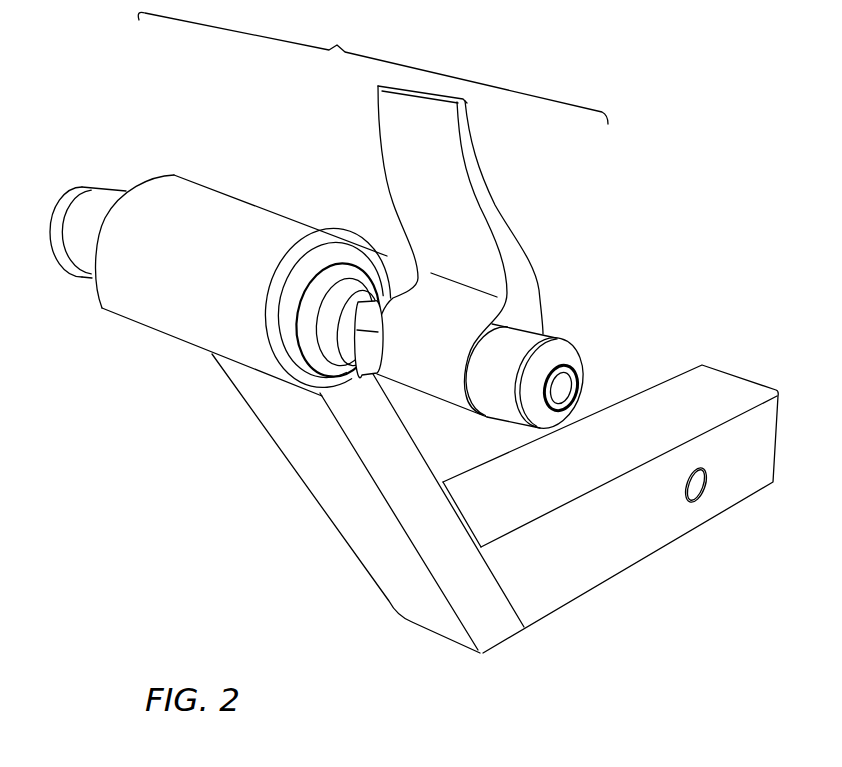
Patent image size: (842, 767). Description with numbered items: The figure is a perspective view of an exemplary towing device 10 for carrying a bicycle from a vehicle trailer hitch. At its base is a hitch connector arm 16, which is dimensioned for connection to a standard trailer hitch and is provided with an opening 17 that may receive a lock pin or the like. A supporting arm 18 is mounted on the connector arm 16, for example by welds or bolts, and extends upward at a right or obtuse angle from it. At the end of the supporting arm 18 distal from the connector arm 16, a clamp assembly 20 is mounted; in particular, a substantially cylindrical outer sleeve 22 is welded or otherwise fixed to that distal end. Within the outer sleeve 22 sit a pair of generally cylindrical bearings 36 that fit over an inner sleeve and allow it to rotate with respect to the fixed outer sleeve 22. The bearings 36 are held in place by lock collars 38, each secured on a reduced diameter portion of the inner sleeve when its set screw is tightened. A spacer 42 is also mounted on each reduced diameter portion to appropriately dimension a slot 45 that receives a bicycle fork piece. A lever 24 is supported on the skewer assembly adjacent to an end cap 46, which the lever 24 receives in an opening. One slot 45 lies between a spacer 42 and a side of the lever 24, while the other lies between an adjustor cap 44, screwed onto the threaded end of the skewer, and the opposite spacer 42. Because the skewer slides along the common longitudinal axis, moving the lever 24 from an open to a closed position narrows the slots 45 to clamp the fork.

The towing device 10 is at (702, 172).
The hitch connector arm 16 is at (602, 545).
The opening 17 is at (705, 490).
The supporting arm 18 is at (338, 505).
The clamp assembly 20 is at (373, 68).
The outer sleeve 22 is at (179, 277).
The lever 24 is at (427, 227).
The bearings 36 is at (350, 246).
The lock collars 38 is at (318, 290).
The spacer 42 is at (353, 280).
The adjustor cap 44 is at (68, 203).
The slot 45 is at (103, 196).
The end cap 46 is at (562, 350).